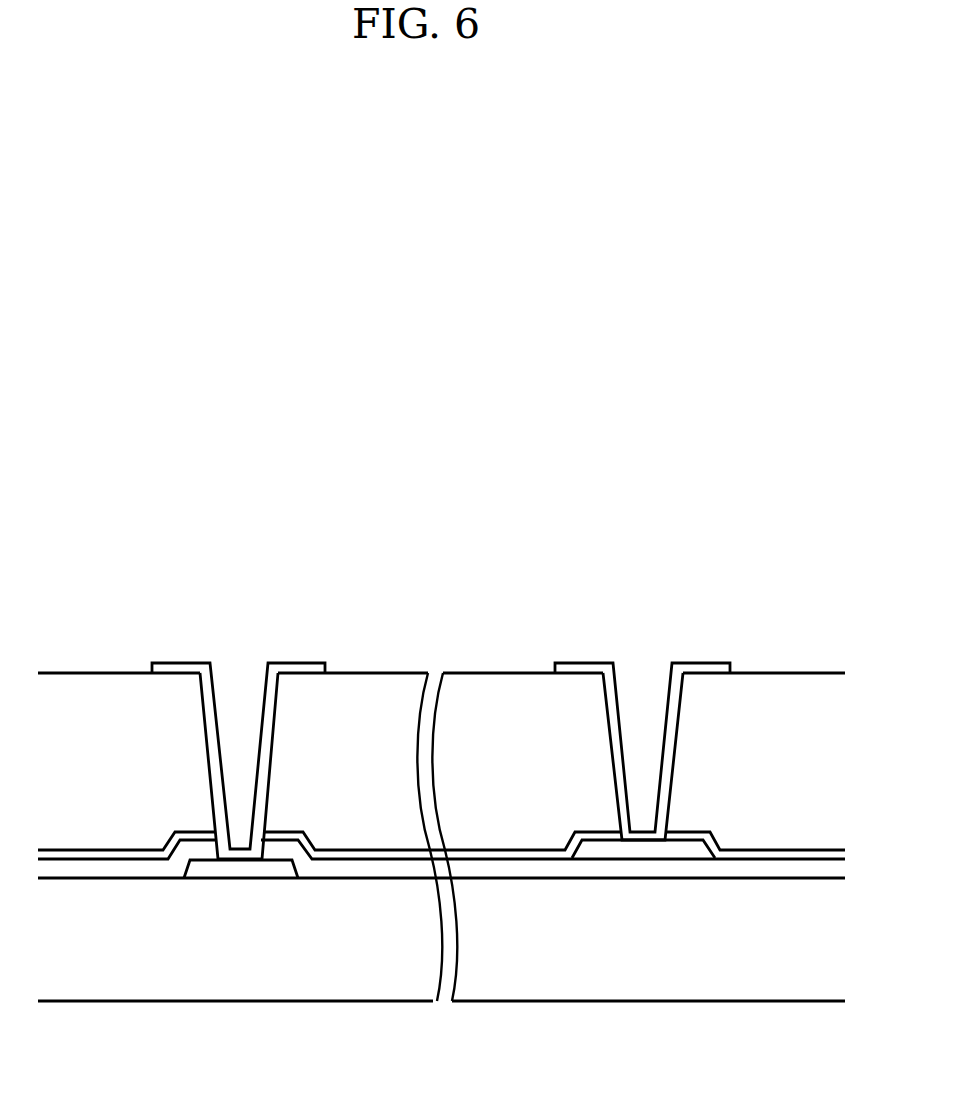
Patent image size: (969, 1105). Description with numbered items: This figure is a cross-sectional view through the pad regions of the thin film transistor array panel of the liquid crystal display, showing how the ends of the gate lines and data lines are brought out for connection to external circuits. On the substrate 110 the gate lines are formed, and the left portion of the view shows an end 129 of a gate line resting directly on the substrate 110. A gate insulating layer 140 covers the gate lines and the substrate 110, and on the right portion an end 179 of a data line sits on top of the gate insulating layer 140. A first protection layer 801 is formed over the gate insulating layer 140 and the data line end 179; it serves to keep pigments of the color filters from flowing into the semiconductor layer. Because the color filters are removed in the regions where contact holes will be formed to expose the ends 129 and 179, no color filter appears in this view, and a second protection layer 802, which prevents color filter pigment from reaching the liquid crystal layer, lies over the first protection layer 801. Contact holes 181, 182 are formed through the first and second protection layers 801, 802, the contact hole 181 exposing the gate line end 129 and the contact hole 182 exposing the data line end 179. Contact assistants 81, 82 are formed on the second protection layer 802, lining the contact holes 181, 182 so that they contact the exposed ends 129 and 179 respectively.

The substrate 110 is at (733, 987).
The end of gate line 129 is at (245, 868).
The gate insulating layer 140 is at (97, 868).
The end of data line 179 is at (647, 850).
The first protection layer 801 is at (360, 853).
The second protection layer 802 is at (80, 715).
The contact hole 181 is at (207, 720).
The contact hole 182 is at (612, 720).
The contact assistant 81 is at (304, 664).
The contact assistant 82 is at (706, 663).